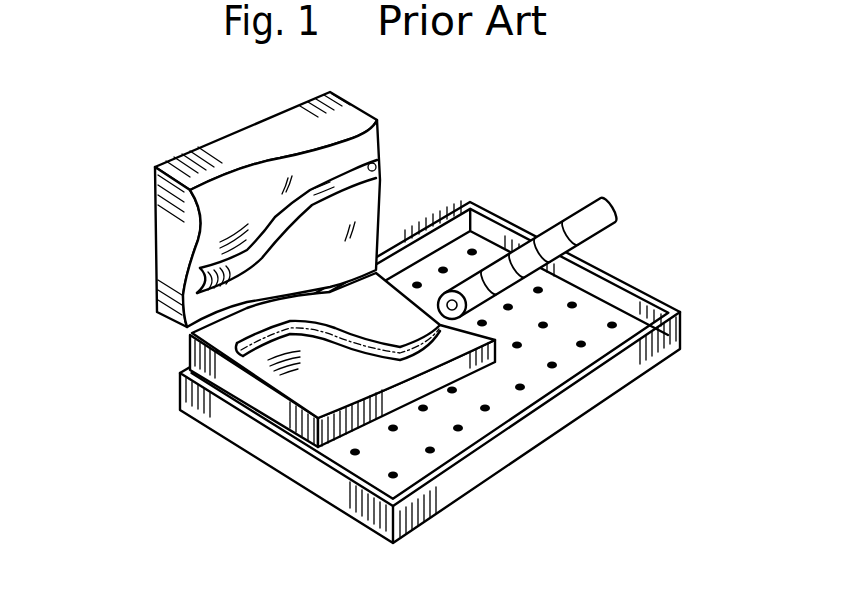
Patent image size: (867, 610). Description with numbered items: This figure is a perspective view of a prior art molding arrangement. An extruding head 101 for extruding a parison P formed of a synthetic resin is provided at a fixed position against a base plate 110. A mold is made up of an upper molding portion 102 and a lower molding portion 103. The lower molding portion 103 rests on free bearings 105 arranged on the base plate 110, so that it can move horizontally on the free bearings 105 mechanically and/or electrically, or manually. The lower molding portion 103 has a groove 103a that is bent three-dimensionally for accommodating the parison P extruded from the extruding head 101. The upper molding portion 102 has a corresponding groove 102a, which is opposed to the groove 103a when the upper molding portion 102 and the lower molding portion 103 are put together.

The extruding head 101 is at (572, 223).
The upper molding portion 102 is at (172, 212).
The groove 102a is at (186, 272).
The lower molding portion 103 is at (192, 355).
The groove 103a is at (313, 336).
The free bearings 105 is at (524, 388).
The base plate 110 is at (598, 313).
The parison P is at (352, 355).